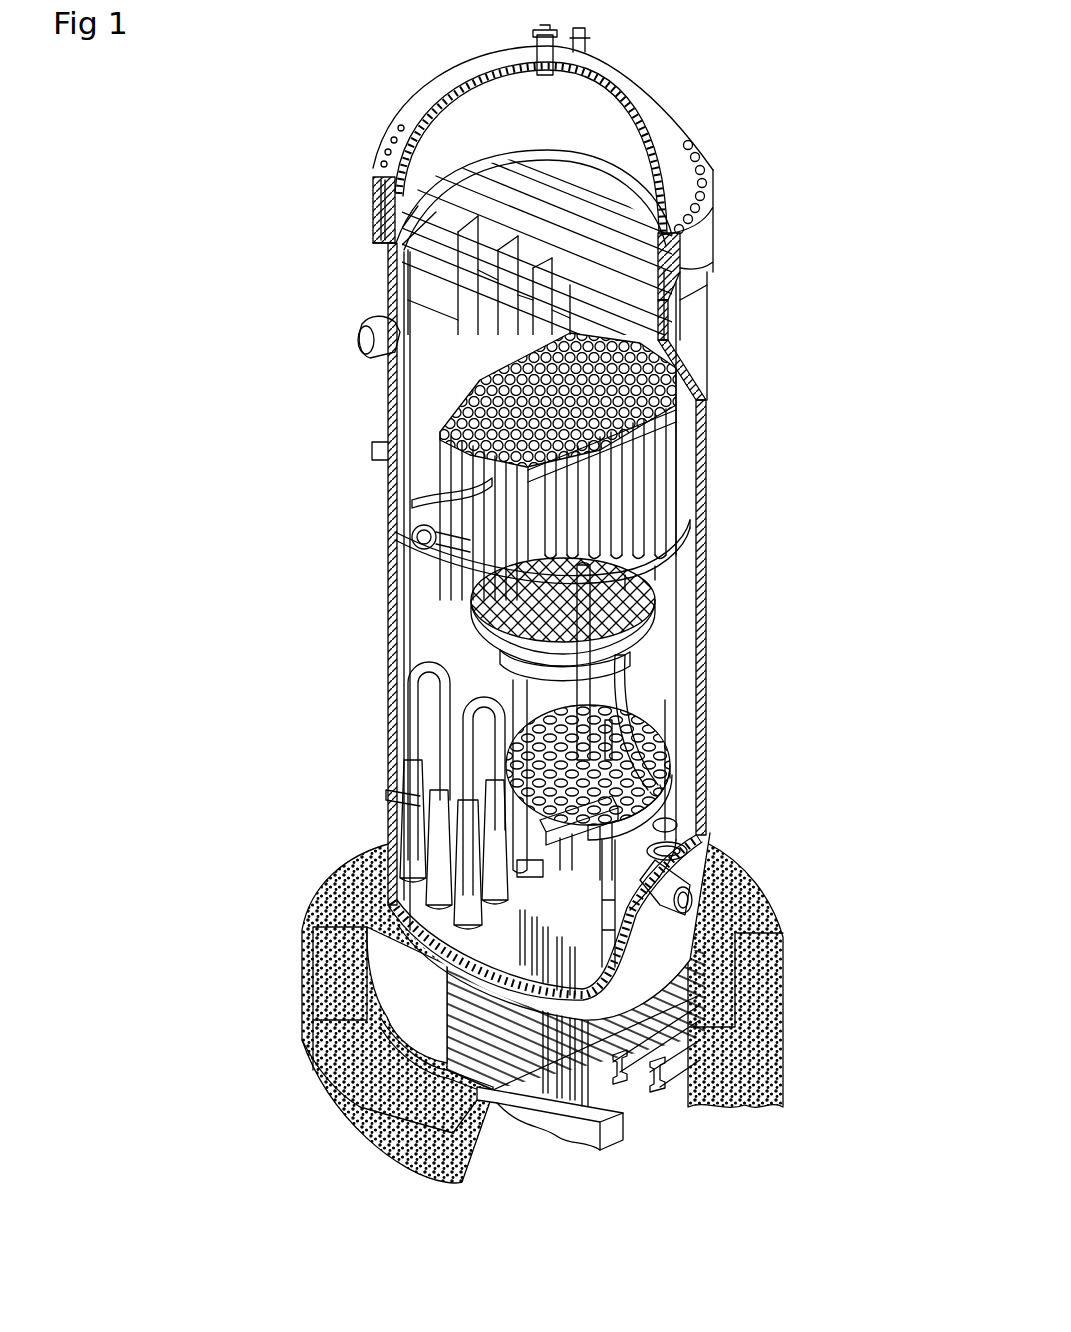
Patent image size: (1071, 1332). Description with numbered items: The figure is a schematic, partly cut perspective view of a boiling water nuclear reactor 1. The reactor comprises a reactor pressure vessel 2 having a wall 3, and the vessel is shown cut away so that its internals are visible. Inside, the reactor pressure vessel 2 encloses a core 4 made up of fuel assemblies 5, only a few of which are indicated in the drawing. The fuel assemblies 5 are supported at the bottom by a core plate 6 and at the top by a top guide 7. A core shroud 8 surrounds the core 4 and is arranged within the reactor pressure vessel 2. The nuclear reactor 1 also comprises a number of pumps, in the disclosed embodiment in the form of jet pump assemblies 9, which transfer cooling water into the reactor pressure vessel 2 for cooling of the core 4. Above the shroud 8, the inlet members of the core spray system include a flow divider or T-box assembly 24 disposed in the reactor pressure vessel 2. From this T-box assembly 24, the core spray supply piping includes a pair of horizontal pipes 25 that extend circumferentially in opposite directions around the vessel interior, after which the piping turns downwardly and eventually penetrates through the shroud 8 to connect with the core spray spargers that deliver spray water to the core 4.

The boiling water nuclear reactor 1 is at (822, 951).
The reactor pressure vessel 2 is at (736, 401).
The wall 3 is at (700, 458).
The core 4 is at (598, 700).
The fuel assemblies 5 is at (706, 645).
The core plate 6 is at (700, 788).
The top guide 7 is at (700, 565).
The core shroud 8 is at (678, 725).
The jet pump assemblies 9 is at (422, 748).
The T-box assembly 24 is at (412, 533).
The horizontal pipes 25 is at (700, 505).